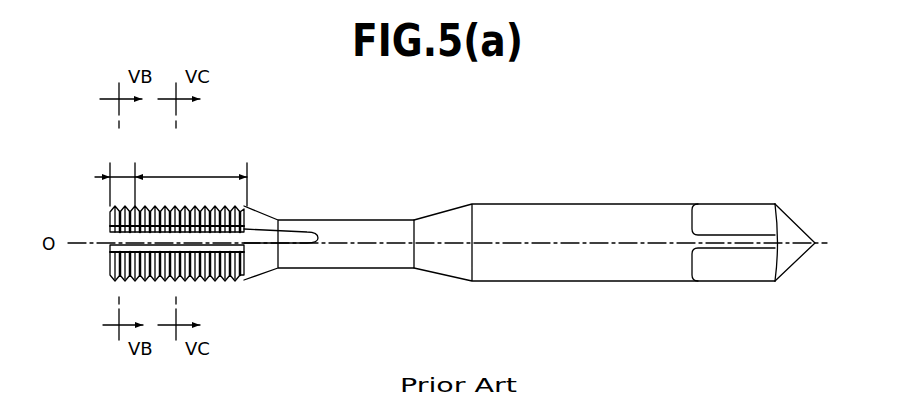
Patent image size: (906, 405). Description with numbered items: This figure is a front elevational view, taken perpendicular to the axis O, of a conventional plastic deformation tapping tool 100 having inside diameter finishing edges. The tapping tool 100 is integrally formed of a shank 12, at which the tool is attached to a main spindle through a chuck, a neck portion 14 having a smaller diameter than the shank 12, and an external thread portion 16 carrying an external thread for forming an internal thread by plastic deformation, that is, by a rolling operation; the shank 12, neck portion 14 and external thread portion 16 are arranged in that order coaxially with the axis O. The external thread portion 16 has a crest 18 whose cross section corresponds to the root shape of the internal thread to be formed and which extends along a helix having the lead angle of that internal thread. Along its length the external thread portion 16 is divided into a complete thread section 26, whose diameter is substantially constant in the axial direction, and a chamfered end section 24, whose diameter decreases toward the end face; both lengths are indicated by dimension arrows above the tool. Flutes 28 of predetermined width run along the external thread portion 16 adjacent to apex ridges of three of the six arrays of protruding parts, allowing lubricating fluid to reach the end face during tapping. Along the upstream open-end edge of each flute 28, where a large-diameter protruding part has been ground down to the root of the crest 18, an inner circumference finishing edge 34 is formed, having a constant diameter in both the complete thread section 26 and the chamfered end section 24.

The tapping tool 100 is at (447, 222).
The shank 12 is at (626, 214).
The neck portion 14 is at (358, 221).
The external thread portion 16 is at (253, 305).
The crest 18 is at (213, 199).
The chamfered end section 24 is at (119, 176).
The complete thread section 26 is at (191, 182).
The flutes 28 is at (137, 239).
The inner circumference finishing edge 34 is at (182, 241).